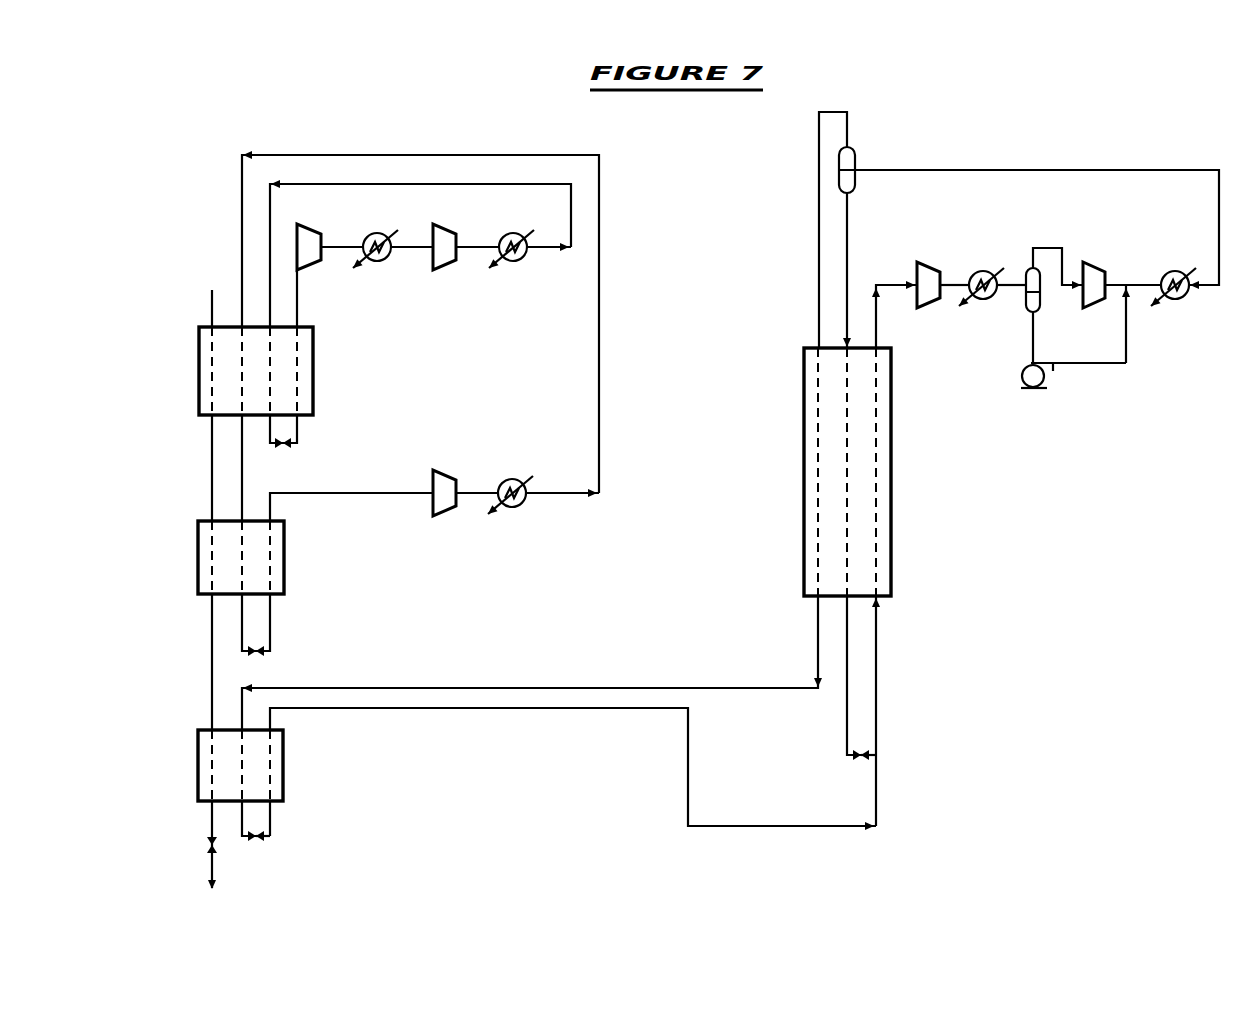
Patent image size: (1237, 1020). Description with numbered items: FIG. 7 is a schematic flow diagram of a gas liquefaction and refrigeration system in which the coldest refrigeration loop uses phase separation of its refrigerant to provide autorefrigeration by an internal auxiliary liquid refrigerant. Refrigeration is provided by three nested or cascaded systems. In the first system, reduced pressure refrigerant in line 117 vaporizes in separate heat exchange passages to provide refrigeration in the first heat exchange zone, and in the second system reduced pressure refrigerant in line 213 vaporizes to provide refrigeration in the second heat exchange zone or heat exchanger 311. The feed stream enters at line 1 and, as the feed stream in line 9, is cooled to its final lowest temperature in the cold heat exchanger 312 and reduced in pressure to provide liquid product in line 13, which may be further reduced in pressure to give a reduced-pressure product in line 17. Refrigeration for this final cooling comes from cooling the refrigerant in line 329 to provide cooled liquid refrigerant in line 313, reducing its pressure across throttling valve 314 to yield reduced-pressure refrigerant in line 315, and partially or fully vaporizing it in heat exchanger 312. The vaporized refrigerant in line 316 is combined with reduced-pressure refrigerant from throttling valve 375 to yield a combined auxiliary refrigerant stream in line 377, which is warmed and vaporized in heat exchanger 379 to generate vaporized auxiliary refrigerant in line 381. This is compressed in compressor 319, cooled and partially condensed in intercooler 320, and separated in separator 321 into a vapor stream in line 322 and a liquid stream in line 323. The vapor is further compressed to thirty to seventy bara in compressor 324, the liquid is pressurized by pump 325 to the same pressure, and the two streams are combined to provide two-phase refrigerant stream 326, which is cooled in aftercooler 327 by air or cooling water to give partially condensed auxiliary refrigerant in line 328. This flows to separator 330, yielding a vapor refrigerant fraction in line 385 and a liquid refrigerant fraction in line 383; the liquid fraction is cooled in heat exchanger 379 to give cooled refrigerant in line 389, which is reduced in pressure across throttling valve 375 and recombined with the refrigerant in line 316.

The feed gas stream 1 is at (212, 302).
The feed stream line 9 is at (212, 690).
The liquid product line 13 is at (212, 812).
The reduced-pressure product line 17 is at (212, 872).
The reduced pressure refrigerant line 117 is at (322, 433).
The reduced pressure refrigerant line 213 is at (294, 624).
The second heat exchange zone or heat exchanger 311 is at (198, 571).
The cold heat exchanger 312 is at (198, 760).
The cooled liquid refrigerant line 313 is at (246, 840).
The throttling valve 314 is at (263, 840).
The reduced-pressure refrigerant line 315 is at (270, 810).
The partially or fully vaporized refrigerant line 316 is at (448, 710).
The compressor 319 is at (918, 268).
The intercooler 320 is at (977, 270).
The separator 321 is at (1026, 308).
The vapor stream line 322 is at (1034, 250).
The liquid stream line 323 is at (1057, 347).
The compressor 324 is at (1083, 268).
The pump 325 is at (1022, 389).
The two-phase refrigerant stream 326 is at (1154, 282).
The aftercooler 327 is at (1168, 302).
The partially condensed auxiliary refrigerant line 328 is at (1023, 170).
The refrigerant line 329 is at (418, 666).
The separator 330 is at (879, 160).
The throttling valve 375 is at (857, 762).
The combined refrigerant stream line 377 is at (902, 614).
The heat exchanger 379 is at (891, 514).
The vaporized auxiliary refrigerant line 381 is at (876, 322).
The liquid refrigerant fraction line 383 is at (871, 207).
The vapor refrigerant fraction line 385 is at (819, 112).
The cooled refrigerant line 389 is at (846, 752).